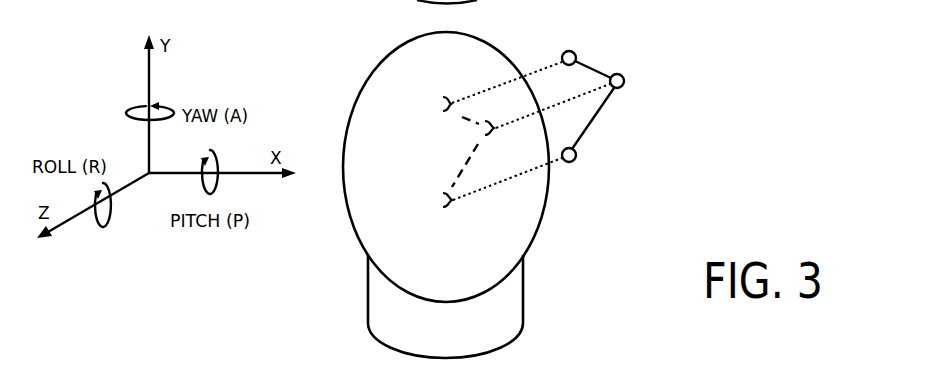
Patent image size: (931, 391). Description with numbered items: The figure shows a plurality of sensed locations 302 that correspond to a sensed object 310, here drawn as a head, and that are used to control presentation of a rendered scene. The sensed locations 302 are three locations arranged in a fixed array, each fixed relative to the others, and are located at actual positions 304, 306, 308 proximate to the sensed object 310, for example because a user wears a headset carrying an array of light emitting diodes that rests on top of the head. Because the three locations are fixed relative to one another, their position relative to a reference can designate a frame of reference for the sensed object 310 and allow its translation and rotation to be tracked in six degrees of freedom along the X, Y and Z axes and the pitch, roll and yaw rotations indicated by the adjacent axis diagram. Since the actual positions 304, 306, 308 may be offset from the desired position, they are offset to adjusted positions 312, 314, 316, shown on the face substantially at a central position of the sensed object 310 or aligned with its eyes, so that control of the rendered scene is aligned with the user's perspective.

The sensed locations 302 is at (657, 86).
The actual position 304 is at (574, 53).
The actual position 306 is at (623, 76).
The actual position 308 is at (576, 152).
The sensed object 310 is at (501, 29).
The adjusted position 312 is at (443, 110).
The adjusted position 314 is at (485, 131).
The adjusted position 316 is at (442, 209).